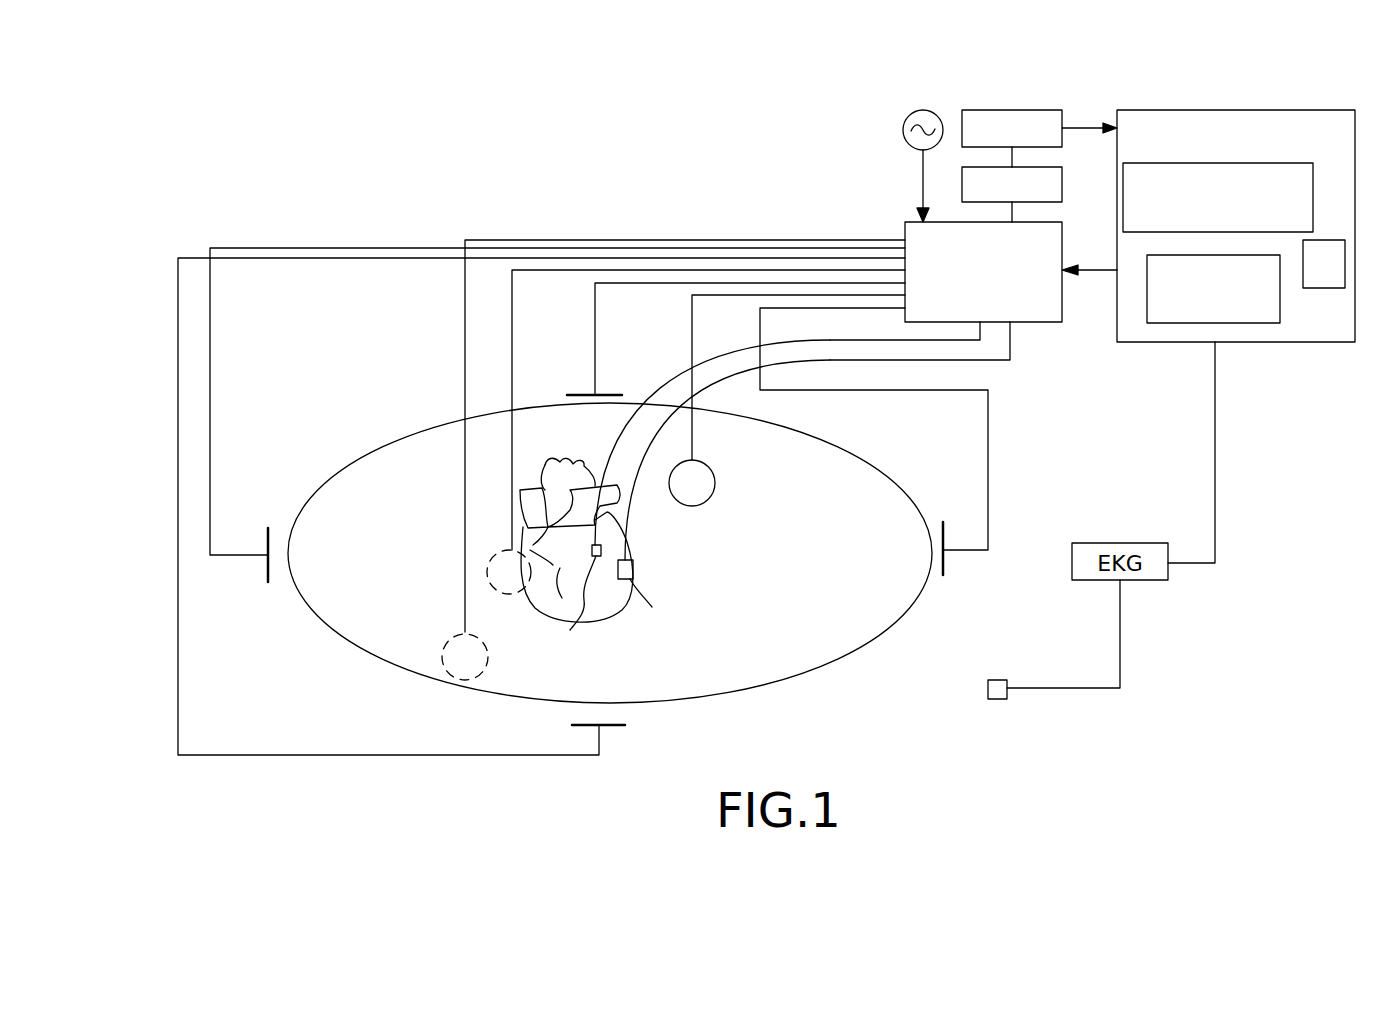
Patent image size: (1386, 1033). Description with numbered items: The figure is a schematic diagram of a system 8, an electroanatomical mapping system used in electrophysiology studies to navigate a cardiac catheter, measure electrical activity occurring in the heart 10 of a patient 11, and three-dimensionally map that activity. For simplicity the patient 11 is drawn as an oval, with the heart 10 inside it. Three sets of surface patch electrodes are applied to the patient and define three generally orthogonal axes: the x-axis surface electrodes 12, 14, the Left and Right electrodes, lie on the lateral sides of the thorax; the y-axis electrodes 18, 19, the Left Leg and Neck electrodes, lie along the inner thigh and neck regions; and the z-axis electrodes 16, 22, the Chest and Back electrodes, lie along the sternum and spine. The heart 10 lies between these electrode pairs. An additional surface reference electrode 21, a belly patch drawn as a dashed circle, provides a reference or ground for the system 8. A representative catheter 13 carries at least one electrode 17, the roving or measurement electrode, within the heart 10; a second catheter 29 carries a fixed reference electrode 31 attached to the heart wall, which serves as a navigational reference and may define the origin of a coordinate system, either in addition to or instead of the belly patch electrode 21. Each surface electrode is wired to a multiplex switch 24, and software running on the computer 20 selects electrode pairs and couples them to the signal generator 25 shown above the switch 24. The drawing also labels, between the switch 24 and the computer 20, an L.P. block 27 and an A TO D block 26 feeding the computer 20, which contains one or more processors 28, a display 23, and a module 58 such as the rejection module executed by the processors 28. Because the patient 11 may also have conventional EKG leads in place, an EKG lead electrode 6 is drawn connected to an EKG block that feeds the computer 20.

The EKG electrode 6 is at (988, 692).
The system 8 is at (266, 160).
The heart 10 is at (633, 568).
The patient 11 is at (840, 452).
The x-axis surface electrode 12 is at (583, 393).
The catheter 13 is at (1012, 345).
The x-axis surface electrode 14 is at (600, 735).
The z-axis electrode 16 is at (693, 437).
The catheter electrode 17 is at (652, 607).
The y-axis electrode 18 is at (265, 575).
The y-axis electrode 19 is at (945, 565).
The computer 20 is at (1208, 336).
The surface reference electrode 21 is at (465, 567).
The z-axis electrode 22 is at (512, 323).
The display 23 is at (1213, 289).
The multiplex switch 24 is at (983, 272).
The signal generator 25 is at (905, 118).
The A to D converter 26 is at (1030, 110).
The low pass filter 27 is at (1062, 180).
The processor 28 is at (1218, 197).
The second catheter 29 is at (613, 423).
The fixed reference electrode 31 is at (580, 592).
The rejection module 58 is at (1324, 264).